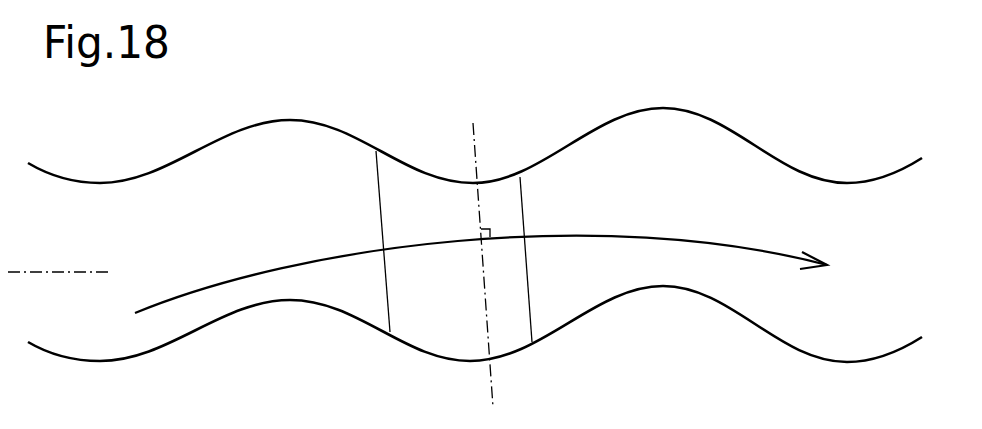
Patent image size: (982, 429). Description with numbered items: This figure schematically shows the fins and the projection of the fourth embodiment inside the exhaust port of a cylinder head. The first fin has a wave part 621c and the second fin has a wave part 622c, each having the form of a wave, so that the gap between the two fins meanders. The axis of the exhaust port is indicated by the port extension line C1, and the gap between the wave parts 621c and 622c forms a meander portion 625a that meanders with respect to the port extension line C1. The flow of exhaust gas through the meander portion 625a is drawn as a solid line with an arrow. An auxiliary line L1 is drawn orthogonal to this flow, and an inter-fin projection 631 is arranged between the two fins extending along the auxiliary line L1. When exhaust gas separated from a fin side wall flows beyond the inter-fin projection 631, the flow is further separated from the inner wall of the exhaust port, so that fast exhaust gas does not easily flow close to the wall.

The wave part 621c is at (397, 143).
The wave part 622c is at (312, 338).
The meander portion 625a is at (481, 252).
The inter-fin projection 631 is at (436, 310).
The auxiliary line L1 is at (477, 148).
The port extension line C1 is at (38, 272).